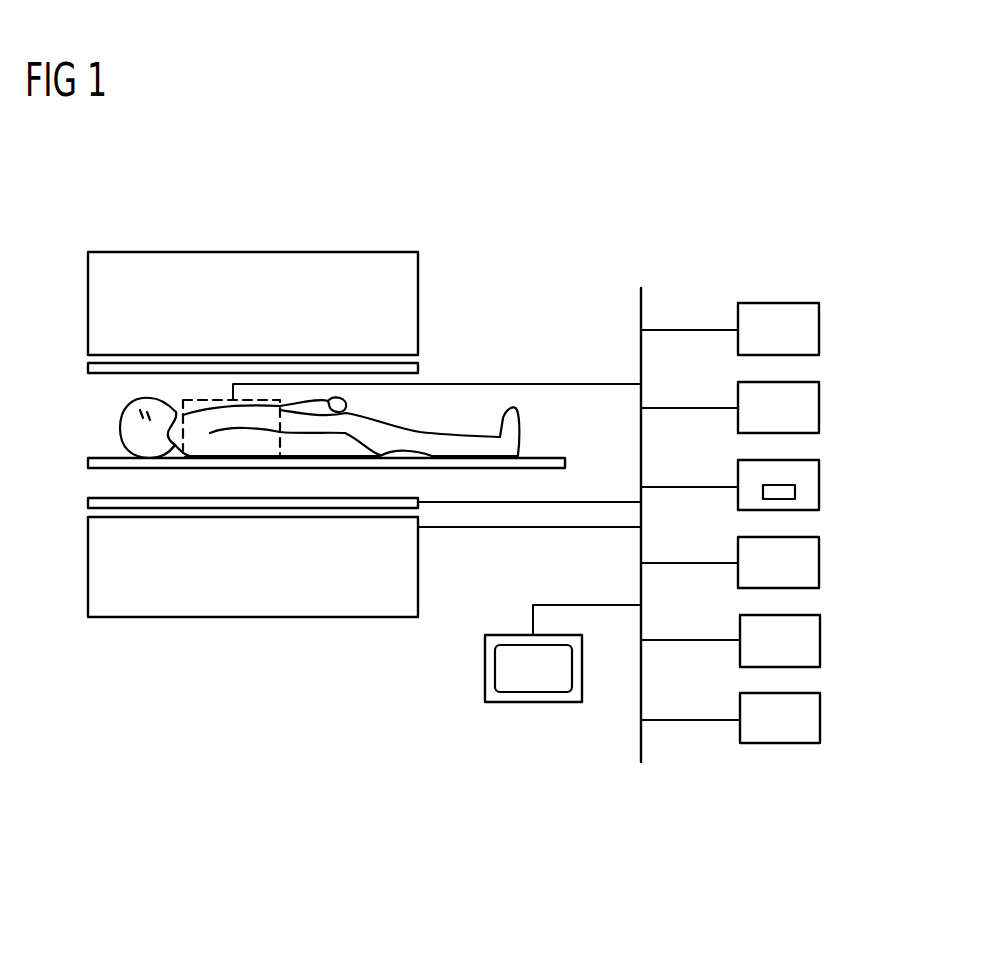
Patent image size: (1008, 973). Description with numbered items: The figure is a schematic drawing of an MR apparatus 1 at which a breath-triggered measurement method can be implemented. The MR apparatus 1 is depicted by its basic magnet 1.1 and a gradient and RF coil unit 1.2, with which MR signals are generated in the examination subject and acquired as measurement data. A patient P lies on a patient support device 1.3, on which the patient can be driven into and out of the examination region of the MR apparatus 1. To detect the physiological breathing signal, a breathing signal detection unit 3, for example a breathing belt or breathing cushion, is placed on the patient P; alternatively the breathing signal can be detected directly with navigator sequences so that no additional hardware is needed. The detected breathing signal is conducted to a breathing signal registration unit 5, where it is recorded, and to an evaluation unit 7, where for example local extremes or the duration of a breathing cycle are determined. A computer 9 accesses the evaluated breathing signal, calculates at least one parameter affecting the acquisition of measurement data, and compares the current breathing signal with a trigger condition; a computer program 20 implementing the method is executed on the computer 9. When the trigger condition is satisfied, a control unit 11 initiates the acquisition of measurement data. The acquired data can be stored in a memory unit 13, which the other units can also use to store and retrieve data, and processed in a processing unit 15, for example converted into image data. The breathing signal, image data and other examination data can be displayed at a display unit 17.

The MR apparatus 1 is at (480, 43).
The basic magnet 1.1 is at (252, 252).
The gradient and RF coil unit 1.2 is at (88, 368).
The patient support device 1.3 is at (88, 462).
The patient P is at (120, 426).
The breathing signal detection unit 3 is at (322, 403).
The breathing signal registration unit 5 is at (722, 155).
The evaluation unit 7 is at (820, 408).
The computer 9 is at (820, 487).
The computer program 20 is at (572, 567).
The control unit 11 is at (570, 757).
The memory unit 13 is at (803, 798).
The processing unit 15 is at (673, 863).
The display unit 17 is at (485, 668).